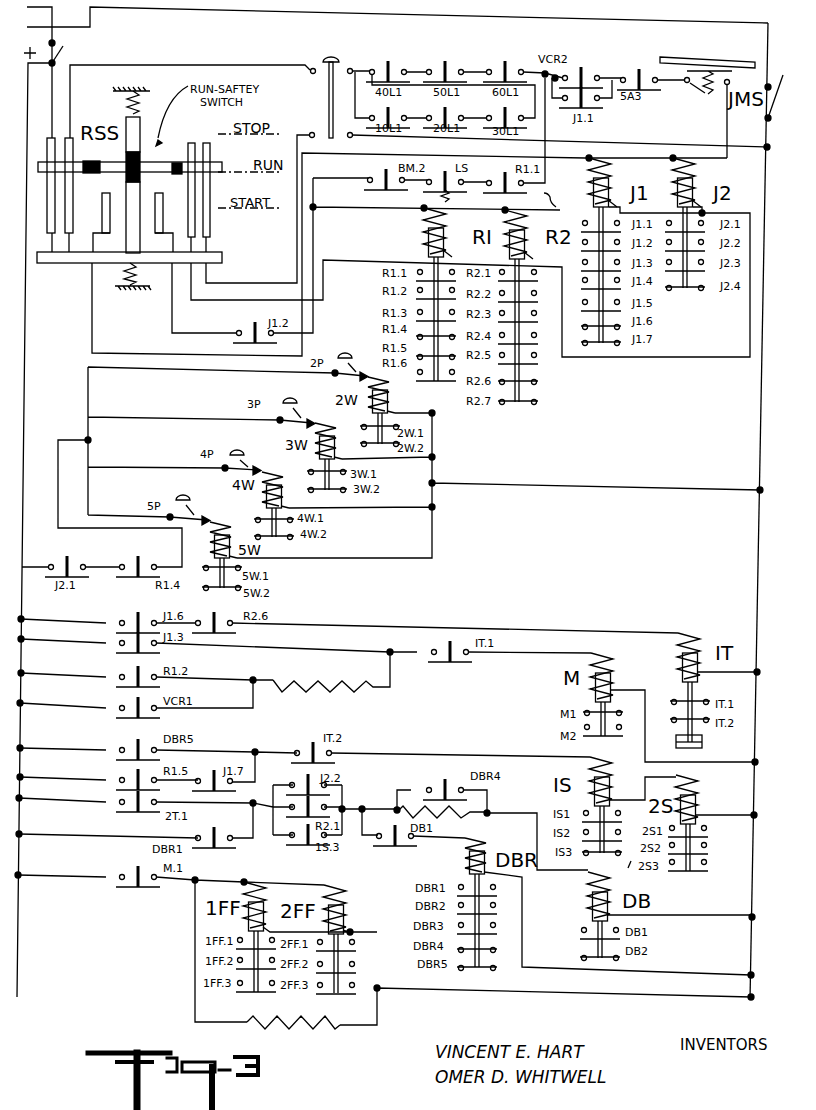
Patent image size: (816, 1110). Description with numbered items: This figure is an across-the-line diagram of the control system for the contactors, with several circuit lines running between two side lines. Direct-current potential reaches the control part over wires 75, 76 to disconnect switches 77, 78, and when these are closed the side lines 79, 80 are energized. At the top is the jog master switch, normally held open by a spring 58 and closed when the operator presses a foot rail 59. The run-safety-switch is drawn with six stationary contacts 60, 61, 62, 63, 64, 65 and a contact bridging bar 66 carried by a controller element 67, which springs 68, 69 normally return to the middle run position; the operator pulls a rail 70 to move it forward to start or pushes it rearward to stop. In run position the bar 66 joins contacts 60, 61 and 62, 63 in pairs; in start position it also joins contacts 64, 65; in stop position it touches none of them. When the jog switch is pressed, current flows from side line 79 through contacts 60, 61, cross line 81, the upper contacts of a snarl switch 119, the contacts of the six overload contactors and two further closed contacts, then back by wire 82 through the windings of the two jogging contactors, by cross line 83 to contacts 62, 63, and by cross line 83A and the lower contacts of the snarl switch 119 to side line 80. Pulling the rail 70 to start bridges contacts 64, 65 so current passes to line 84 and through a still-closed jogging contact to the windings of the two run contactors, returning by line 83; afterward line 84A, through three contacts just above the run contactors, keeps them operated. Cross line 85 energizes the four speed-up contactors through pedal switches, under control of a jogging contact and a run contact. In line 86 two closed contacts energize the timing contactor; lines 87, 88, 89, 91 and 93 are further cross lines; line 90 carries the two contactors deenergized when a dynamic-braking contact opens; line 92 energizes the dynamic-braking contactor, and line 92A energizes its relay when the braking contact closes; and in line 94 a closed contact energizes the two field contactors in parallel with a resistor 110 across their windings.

The spring 58 is at (698, 88).
The foot rail 59 is at (672, 54).
The stationary contact 60 is at (56, 244).
The stationary contact 61 is at (66, 236).
The stationary contact 62 is at (188, 161).
The stationary contact 63 is at (220, 153).
The stationary contact 64 is at (102, 211).
The stationary contact 65 is at (162, 202).
The contact bridging bar 66 is at (218, 173).
The controller element 67 is at (140, 126).
The spring 68 is at (126, 112).
The spring 69 is at (127, 273).
The rail 70 is at (67, 263).
The wire 75 is at (61, 13).
The wire 76 is at (111, 11).
The disconnect switch 77 is at (68, 46).
The disconnect switch 78 is at (772, 117).
The side line 79 is at (29, 100).
The side line 80 is at (772, 177).
The cross line 81 is at (150, 66).
The wire 82 is at (92, 312).
The cross line 83 is at (212, 304).
The cross line 83A is at (226, 281).
The line 84 is at (171, 334).
The line 84A is at (566, 196).
The cross line 85 is at (64, 438).
The line 86 is at (45, 623).
The line 87 is at (45, 643).
The line 88 is at (45, 674).
The line 89 is at (48, 706).
The line 90 is at (48, 746).
The line 91 is at (48, 776).
The line 92 is at (48, 801).
The line 92A is at (362, 838).
The line 93 is at (48, 838).
The line 94 is at (48, 876).
The resistor 110 is at (310, 1026).
The snarl switch 119 is at (318, 64).